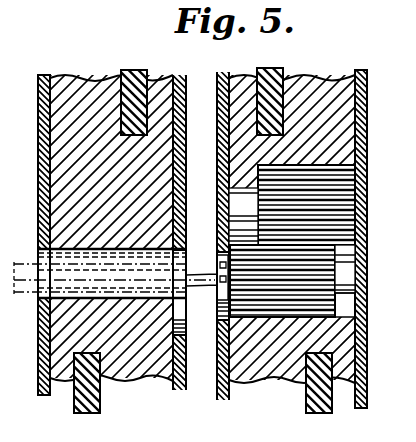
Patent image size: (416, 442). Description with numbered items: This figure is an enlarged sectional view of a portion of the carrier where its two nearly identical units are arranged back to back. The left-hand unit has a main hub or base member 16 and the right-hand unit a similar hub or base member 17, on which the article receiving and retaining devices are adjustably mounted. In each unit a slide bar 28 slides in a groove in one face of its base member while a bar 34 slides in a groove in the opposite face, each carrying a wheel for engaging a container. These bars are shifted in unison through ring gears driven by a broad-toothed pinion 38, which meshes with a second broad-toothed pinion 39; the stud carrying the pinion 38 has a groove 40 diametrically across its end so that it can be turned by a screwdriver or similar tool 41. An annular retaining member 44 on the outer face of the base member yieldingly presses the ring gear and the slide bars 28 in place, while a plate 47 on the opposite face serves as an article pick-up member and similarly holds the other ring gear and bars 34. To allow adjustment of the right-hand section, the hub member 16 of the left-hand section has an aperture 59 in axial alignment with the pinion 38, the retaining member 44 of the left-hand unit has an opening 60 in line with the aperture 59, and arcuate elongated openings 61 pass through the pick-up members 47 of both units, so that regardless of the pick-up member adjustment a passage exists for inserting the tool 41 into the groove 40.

The main hub or base member 16 is at (88, 198).
The hub or base member 17 is at (320, 94).
The slide bar 28 is at (82, 408).
The bar 34 is at (128, 78).
The broad-toothed pinion 38 is at (282, 318).
The broad-toothed pinion 39 is at (340, 207).
The groove 40 is at (181, 312).
The screwdriver or similar tool 41 is at (201, 284).
The annular retaining member 44 is at (52, 368).
The plate or pick-up member 47 is at (222, 115).
The aperture 59 is at (125, 300).
The opening 60 is at (48, 295).
The elongated openings 61 is at (218, 268).